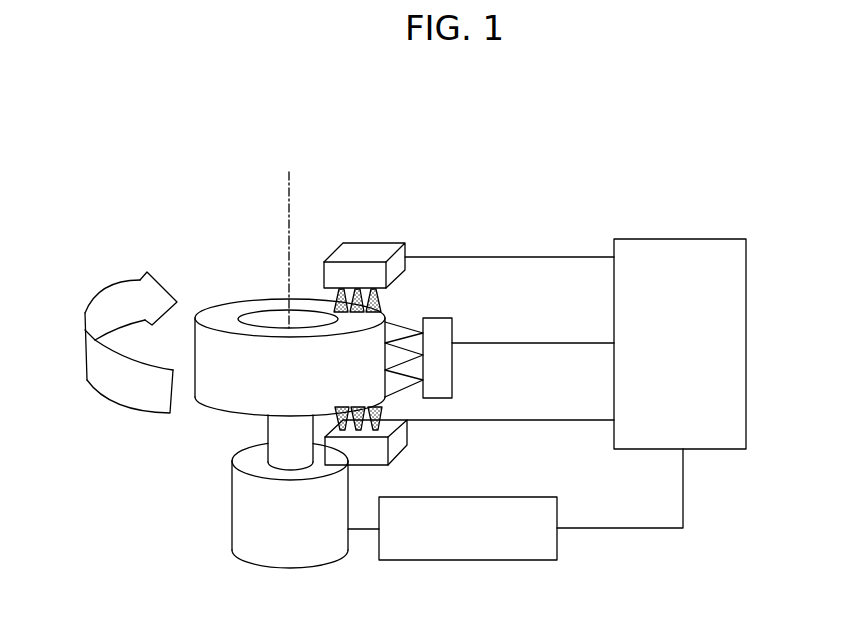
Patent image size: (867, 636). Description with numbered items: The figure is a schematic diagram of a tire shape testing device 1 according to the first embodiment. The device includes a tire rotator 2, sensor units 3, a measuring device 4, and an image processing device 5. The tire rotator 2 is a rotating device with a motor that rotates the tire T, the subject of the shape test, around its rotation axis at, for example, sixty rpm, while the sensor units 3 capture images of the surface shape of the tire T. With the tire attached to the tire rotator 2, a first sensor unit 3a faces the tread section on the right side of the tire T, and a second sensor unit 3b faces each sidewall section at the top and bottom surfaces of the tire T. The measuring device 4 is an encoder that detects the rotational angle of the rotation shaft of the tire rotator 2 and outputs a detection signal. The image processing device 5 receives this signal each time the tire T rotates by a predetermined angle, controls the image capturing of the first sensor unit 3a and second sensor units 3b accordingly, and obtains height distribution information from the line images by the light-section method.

The tire shape testing device 1 is at (673, 144).
The tire T is at (245, 298).
The tire rotator 2 is at (247, 512).
The sensor units 3 is at (469, 340).
The first sensor unit 3a is at (452, 370).
The second sensor unit 3b is at (363, 252).
The measuring device 4 is at (557, 547).
The image processing device 5 is at (680, 239).